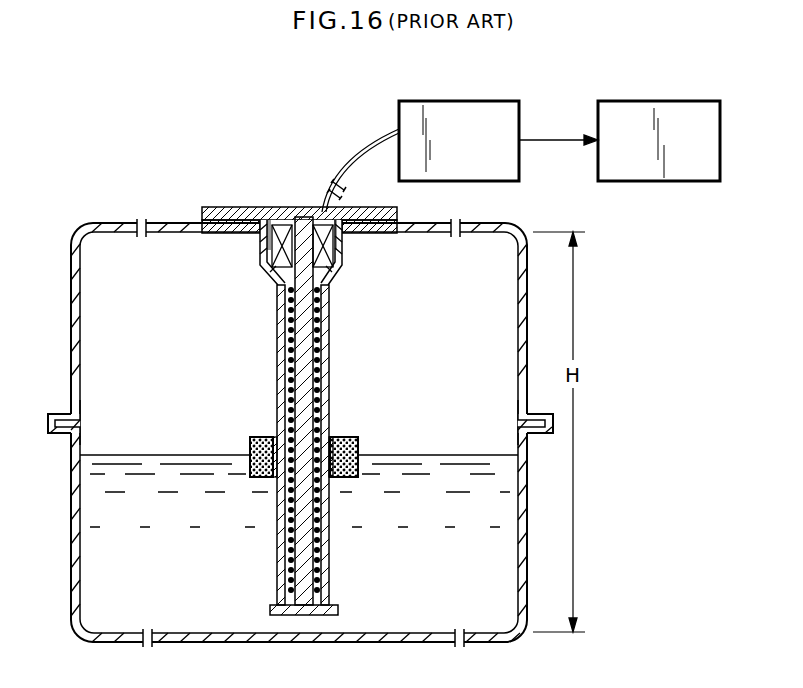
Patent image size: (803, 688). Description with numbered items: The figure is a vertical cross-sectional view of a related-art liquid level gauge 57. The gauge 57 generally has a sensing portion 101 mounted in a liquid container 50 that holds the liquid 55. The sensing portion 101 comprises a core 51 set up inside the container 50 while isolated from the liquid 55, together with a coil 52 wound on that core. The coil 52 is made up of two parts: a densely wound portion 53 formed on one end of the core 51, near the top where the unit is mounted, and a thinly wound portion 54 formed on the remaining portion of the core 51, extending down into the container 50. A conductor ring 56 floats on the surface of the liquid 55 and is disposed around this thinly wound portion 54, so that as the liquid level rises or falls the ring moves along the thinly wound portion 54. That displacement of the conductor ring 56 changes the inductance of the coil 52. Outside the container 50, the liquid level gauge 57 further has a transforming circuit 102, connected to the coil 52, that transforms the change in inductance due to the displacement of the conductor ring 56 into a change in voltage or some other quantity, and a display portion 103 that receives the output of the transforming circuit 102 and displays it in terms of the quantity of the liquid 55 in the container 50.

The liquid container 50 is at (73, 342).
The core 51 is at (318, 320).
The coil 52 is at (320, 352).
The densely wound portion 53 is at (268, 250).
The thinly wound portion 54 is at (292, 314).
The liquid 55 is at (128, 455).
The conductor ring 56 is at (308, 435).
The liquid level gauge 57 is at (345, 147).
The sensing portion 101 is at (313, 411).
The transforming circuit 102 is at (519, 181).
The display portion 103 is at (599, 181).